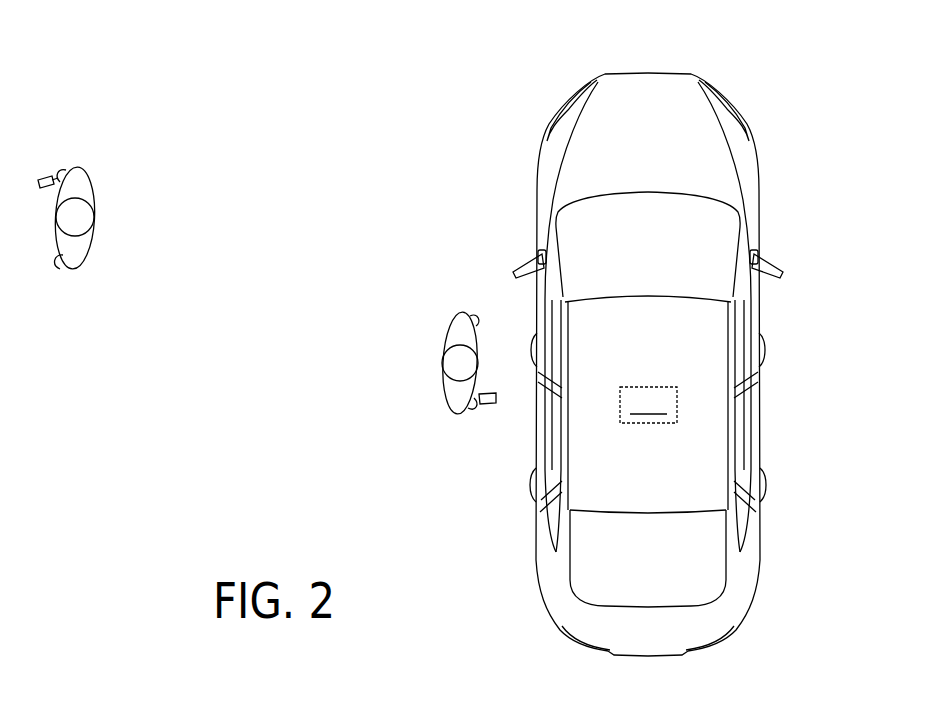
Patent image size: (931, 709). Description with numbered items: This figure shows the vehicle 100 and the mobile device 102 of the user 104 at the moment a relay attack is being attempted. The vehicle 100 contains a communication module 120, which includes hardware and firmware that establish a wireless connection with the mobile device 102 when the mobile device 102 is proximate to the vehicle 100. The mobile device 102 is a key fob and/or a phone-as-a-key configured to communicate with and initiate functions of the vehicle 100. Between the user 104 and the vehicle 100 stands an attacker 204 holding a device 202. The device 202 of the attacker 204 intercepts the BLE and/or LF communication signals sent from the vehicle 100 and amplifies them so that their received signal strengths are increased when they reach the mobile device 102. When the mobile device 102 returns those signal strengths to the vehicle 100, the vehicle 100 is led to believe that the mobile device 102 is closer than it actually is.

The vehicle 100 is at (697, 72).
The mobile device 102 is at (45, 177).
The user 104 is at (92, 253).
The communication module 120 is at (648, 405).
The device 202 is at (490, 404).
The attacker 204 is at (445, 329).